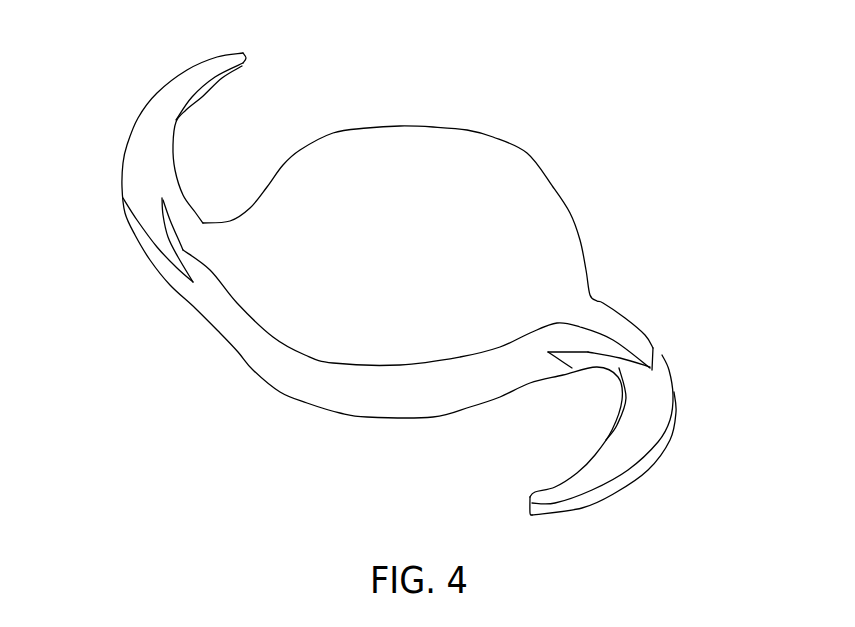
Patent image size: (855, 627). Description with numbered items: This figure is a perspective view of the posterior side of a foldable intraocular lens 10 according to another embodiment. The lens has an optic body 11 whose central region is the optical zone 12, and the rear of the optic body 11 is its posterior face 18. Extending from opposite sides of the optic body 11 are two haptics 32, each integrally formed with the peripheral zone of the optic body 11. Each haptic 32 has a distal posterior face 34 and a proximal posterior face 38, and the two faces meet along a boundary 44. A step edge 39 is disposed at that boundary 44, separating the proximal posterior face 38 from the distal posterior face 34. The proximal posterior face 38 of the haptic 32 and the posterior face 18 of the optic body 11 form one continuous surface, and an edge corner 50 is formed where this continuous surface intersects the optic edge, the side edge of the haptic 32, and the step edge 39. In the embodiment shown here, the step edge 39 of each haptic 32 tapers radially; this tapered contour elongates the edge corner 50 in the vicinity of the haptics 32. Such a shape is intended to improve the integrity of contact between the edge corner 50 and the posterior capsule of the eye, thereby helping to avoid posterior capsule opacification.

The intraocular lens 10 is at (567, 106).
The optic body 11 is at (587, 172).
The optical zone 12 is at (420, 255).
The posterior face 18 is at (347, 150).
The haptic 32 is at (112, 103).
The distal posterior face 34 is at (143, 167).
The proximal posterior face 38 is at (190, 231).
The step edge 39 is at (187, 253).
The boundary 44 is at (147, 228).
The edge corner 50 is at (273, 337).